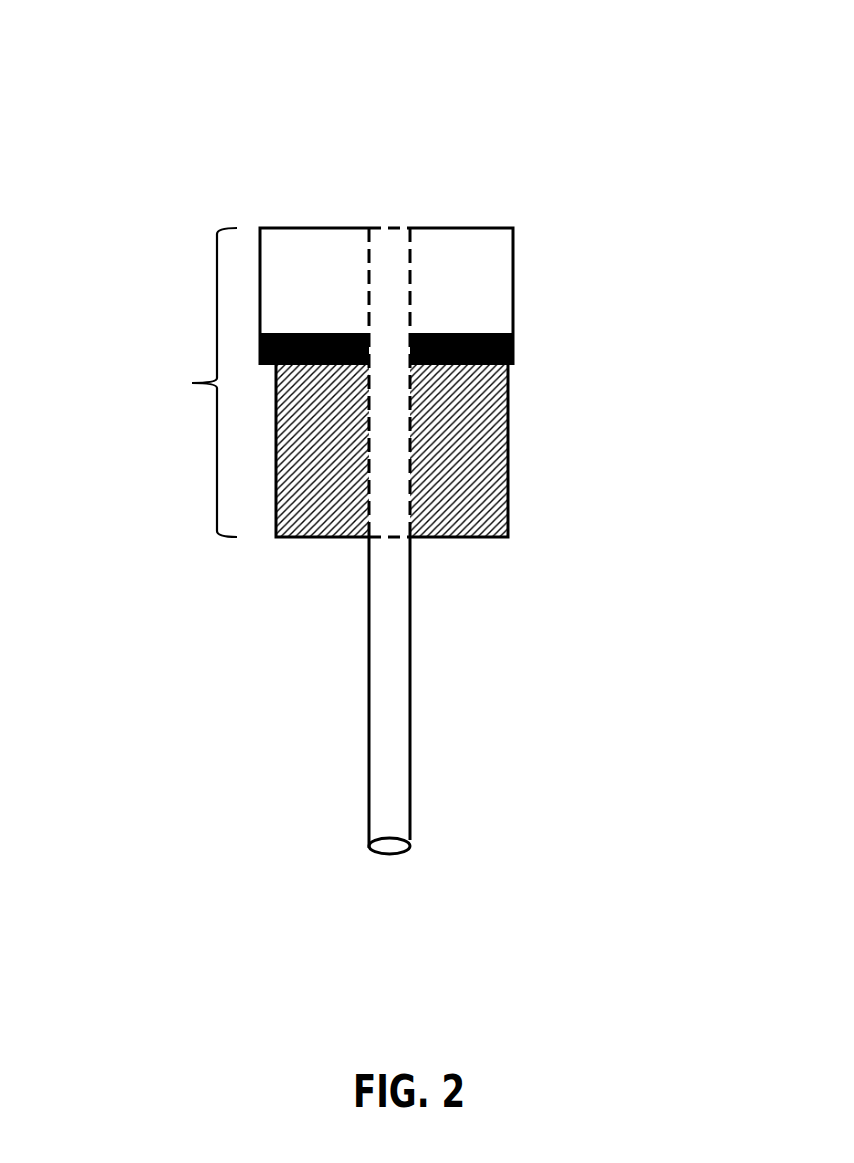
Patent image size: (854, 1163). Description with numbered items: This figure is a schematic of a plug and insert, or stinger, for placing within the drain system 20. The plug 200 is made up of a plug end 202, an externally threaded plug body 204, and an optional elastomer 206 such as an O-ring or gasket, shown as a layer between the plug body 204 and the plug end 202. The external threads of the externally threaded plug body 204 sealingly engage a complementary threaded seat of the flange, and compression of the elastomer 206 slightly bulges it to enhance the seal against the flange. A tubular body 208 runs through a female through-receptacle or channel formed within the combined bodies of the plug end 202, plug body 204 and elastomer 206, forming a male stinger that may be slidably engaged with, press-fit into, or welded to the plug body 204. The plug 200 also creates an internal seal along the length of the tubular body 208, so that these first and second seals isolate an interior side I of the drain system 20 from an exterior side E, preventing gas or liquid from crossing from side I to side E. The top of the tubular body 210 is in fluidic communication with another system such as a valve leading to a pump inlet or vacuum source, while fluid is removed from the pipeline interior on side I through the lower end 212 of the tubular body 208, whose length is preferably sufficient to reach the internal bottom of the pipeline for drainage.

The drain system 20 is at (130, 98).
The plug 200 is at (172, 382).
The plug end 202 is at (505, 477).
The externally threaded plug body 204 is at (513, 282).
The elastomer 206 is at (513, 353).
The tubular body 208 is at (388, 280).
The top of the tubular body 210 is at (392, 227).
The lower end 212 is at (378, 850).
The exterior side E is at (450, 227).
The interior side I is at (332, 537).